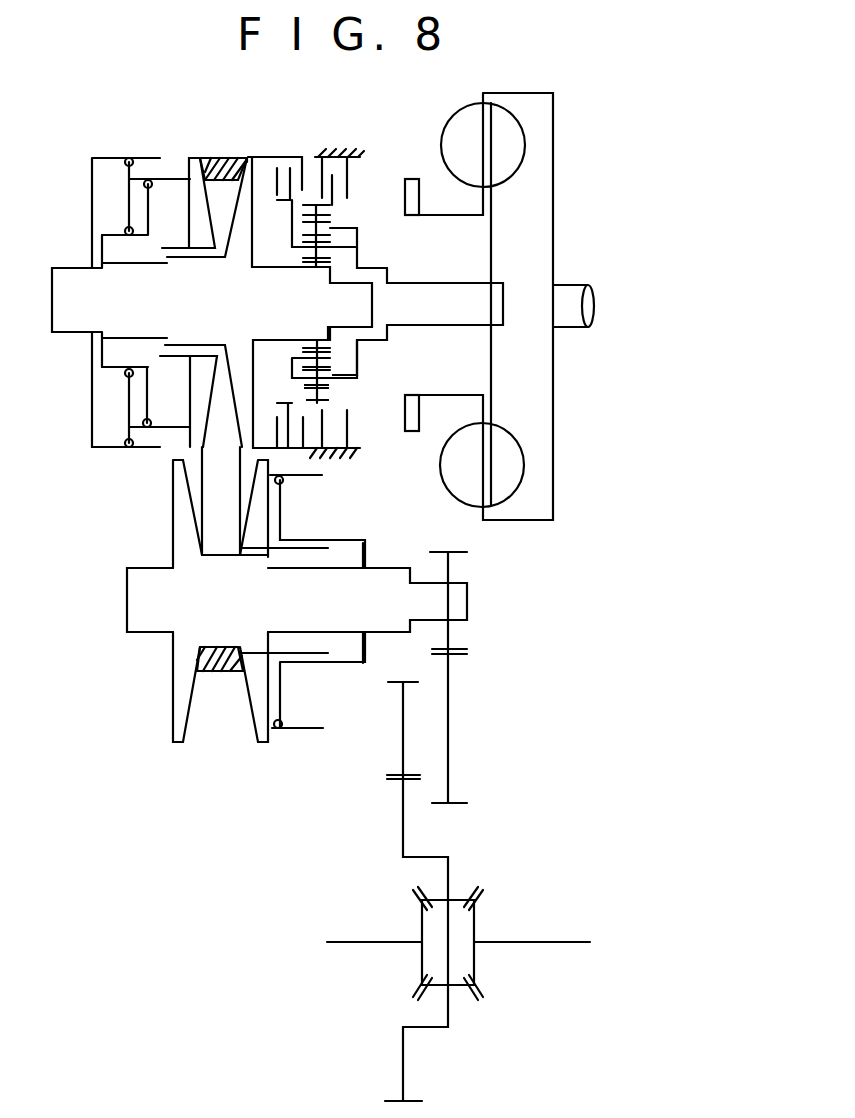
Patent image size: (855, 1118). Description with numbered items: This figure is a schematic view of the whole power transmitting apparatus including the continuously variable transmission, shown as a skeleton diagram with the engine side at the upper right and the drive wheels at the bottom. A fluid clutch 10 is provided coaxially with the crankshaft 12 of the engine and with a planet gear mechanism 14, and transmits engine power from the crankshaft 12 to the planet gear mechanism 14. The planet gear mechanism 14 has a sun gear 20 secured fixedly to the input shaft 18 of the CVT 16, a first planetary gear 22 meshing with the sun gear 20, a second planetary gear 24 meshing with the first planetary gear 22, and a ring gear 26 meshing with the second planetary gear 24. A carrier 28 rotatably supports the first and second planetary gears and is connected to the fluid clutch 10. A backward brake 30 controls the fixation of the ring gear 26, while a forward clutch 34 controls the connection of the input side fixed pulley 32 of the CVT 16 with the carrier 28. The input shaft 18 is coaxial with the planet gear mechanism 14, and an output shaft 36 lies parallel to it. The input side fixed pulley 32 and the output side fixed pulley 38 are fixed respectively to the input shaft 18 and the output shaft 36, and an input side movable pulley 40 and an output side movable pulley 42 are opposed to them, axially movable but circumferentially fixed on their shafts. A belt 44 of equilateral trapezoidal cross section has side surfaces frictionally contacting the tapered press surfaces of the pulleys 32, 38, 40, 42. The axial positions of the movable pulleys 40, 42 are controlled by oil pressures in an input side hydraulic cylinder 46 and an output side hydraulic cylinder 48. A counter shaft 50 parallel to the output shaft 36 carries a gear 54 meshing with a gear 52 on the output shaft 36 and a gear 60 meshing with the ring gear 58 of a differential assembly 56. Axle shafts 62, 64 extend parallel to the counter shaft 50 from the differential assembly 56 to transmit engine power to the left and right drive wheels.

The fluid clutch 10 is at (532, 148).
The crankshaft 12 is at (585, 318).
The planet gear mechanism 14 is at (300, 156).
The CVT 16 is at (222, 156).
The input shaft 18 is at (97, 315).
The sun gear 20 is at (322, 340).
The first planetary gear 22 is at (330, 362).
The second planetary gear 24 is at (328, 385).
The ring gear 26 is at (330, 422).
The carrier 28 is at (357, 375).
The backward brake 30 is at (338, 455).
The input side fixed pulley 32 is at (242, 417).
The forward clutch 34 is at (290, 448).
The output shaft 36 is at (158, 610).
The output side fixed pulley 38 is at (173, 725).
The input side movable pulley 40 is at (190, 157).
The output side movable pulley 42 is at (258, 715).
The belt 44 is at (220, 671).
The input side hydraulic cylinder 46 is at (158, 213).
The output side hydraulic cylinder 48 is at (277, 698).
The counter shaft 50 is at (433, 730).
The gear 52 is at (458, 647).
The gear 54 is at (458, 658).
The differential assembly 56 is at (487, 893).
The ring gear 58 is at (393, 782).
The gear 60 is at (393, 775).
The axle shaft 62 is at (365, 943).
The axle shaft 64 is at (530, 943).